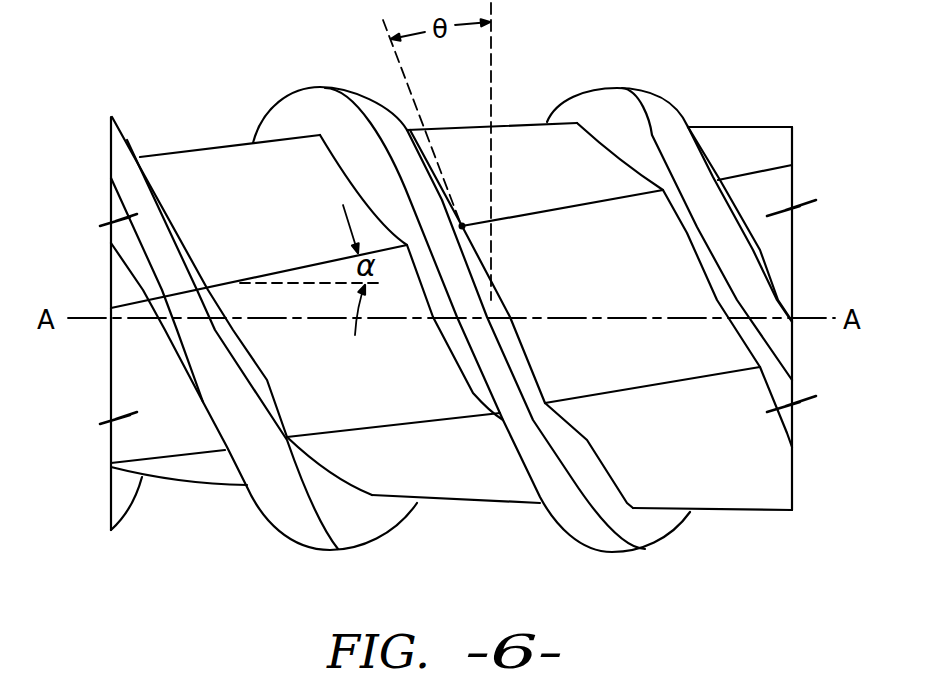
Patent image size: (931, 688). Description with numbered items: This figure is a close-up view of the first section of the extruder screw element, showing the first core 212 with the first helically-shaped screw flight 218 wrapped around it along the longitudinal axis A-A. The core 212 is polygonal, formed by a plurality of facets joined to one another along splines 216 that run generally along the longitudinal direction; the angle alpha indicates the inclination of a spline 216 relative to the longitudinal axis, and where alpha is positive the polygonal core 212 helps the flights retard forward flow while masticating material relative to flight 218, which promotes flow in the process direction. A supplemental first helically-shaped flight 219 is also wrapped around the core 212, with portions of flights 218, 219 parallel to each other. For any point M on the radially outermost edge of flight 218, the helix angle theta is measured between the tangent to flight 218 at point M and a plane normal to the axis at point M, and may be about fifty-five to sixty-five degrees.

The first core 212 is at (530, 153).
The spline 216 is at (224, 147).
The first helically-shaped screw flight 218 is at (322, 85).
The supplemental first helically-shaped flight 219 is at (620, 85).
The point M is at (462, 225).